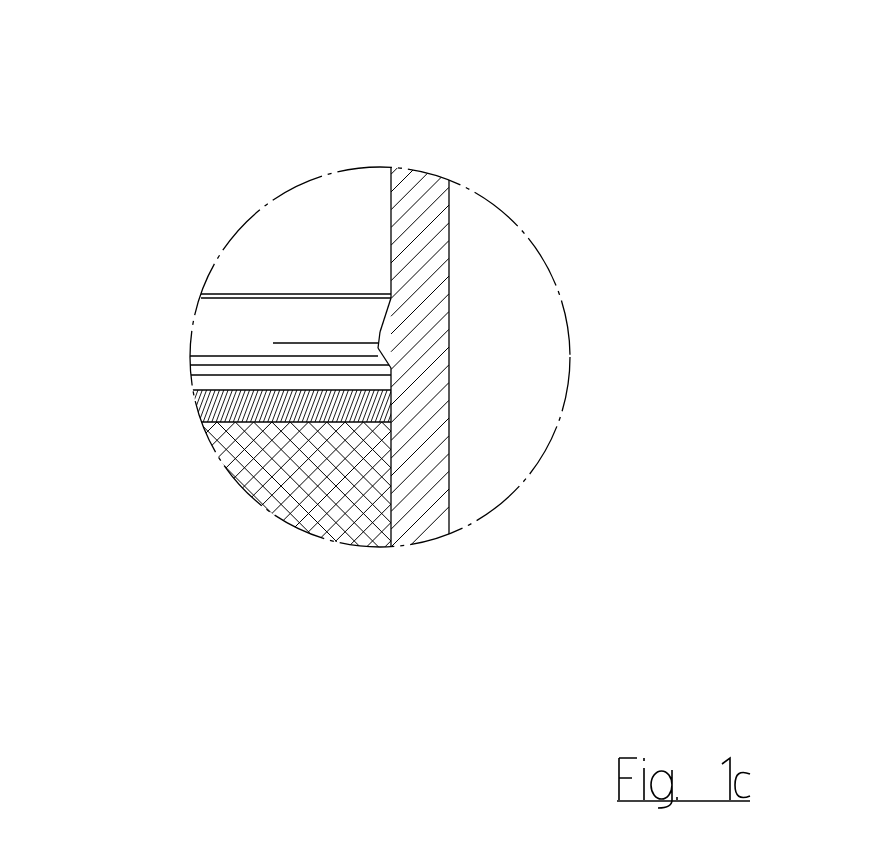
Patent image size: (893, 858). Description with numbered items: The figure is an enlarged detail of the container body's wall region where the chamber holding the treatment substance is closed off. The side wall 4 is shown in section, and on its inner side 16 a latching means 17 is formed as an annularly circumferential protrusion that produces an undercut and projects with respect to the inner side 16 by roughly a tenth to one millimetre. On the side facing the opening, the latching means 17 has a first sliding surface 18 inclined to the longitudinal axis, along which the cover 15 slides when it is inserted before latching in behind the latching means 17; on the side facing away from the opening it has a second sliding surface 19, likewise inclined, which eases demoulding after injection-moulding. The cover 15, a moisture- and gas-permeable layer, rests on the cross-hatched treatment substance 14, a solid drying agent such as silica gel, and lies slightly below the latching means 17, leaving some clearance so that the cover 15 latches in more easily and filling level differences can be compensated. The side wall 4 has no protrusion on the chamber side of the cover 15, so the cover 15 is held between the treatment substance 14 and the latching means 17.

The side wall 4 is at (433, 212).
The treatment substance 14 is at (315, 476).
The cover 15 is at (270, 404).
The inner side 16 is at (391, 230).
The latching means 17 is at (380, 332).
The first sliding surface 18 is at (388, 307).
The second sliding surface 19 is at (380, 363).